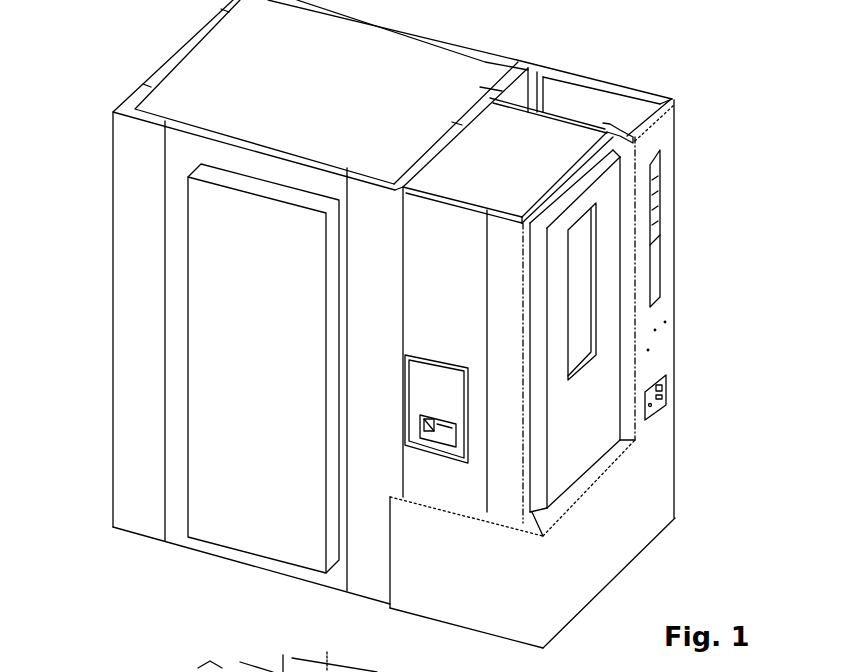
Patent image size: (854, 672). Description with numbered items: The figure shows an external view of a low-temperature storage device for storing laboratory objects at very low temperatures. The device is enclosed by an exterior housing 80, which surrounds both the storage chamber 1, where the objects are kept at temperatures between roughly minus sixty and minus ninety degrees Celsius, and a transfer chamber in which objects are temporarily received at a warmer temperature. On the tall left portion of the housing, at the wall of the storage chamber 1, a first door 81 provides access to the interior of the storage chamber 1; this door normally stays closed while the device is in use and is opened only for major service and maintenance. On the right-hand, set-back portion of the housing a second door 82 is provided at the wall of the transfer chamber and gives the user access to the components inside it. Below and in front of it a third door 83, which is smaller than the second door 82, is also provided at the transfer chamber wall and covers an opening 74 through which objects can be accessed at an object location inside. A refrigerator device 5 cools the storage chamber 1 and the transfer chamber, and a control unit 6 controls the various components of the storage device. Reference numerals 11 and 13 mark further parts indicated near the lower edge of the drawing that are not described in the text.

The storage chamber 1 is at (185, 651).
The refrigerator device 5 is at (669, 309).
The control unit 6 is at (678, 380).
The machine bed 11 is at (243, 645).
The guide 13 is at (323, 650).
The opening 74 is at (469, 472).
The exterior housing 80 is at (219, 358).
The first door 81 is at (253, 376).
The second door 82 is at (625, 363).
The third door 83 is at (494, 547).